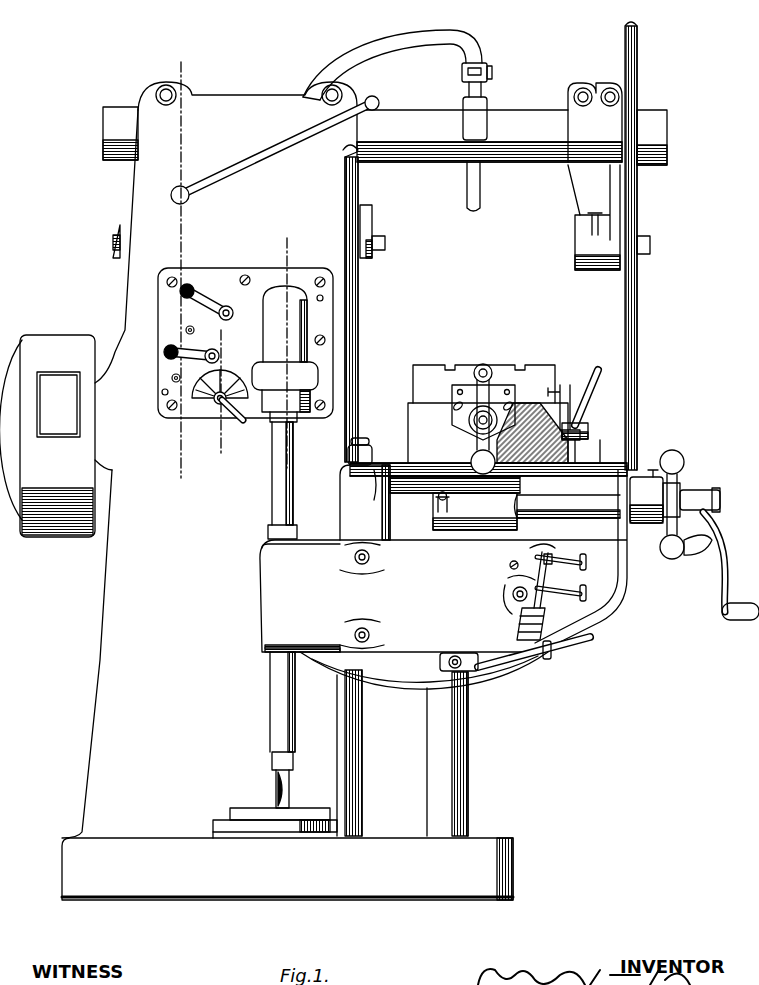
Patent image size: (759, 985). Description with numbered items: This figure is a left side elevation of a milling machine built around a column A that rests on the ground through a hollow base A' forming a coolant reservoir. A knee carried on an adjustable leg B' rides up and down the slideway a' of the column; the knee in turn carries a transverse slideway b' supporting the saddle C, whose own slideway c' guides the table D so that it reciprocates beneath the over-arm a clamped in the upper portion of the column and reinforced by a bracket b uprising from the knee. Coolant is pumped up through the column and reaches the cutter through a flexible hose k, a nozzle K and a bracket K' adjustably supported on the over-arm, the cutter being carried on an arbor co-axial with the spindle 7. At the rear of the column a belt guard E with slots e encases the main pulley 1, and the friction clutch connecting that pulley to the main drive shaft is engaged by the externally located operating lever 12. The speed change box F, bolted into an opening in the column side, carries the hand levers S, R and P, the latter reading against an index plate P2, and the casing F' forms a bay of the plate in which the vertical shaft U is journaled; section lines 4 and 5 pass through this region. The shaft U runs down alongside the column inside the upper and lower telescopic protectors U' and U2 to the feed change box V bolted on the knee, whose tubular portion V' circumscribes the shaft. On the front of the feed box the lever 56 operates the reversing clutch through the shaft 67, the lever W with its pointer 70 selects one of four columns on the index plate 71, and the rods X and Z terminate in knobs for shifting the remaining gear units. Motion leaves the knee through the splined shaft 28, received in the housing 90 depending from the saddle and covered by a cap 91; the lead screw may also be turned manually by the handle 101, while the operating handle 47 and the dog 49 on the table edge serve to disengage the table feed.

The column A is at (210, 460).
The base A' is at (303, 869).
The over-arm a is at (489, 176).
The slideway a' is at (298, 754).
The bracket b is at (646, 246).
The slideway b' is at (590, 440).
The adjustable leg B' is at (462, 754).
The flexible hose k is at (384, 38).
The nozzle K is at (486, 186).
The bracket K' is at (489, 101).
The spindle 7 is at (382, 250).
The operating lever 12 is at (277, 150).
The shaft 4 is at (179, 268).
The shaft 5 is at (225, 394).
The speed change box F is at (245, 328).
The casing F' is at (281, 354).
The hand lever S is at (180, 301).
The hand lever R is at (165, 357).
The hand lever P is at (240, 422).
The index plate P2 is at (228, 390).
The belt guard E is at (57, 338).
The pulley 1 is at (58, 404).
The slots e is at (61, 437).
The upper telescopic protector U' is at (267, 480).
The lower telescopic protector U2 is at (275, 702).
The vertical shaft U is at (266, 789).
The feed change box V is at (443, 576).
The tubular portion V' is at (283, 559).
The shaft 67 is at (365, 489).
The splined shaft 28 is at (405, 510).
The housing 90 is at (449, 514).
The cap 91 is at (598, 508).
The table D is at (488, 366).
The saddle C is at (488, 433).
The slideway c' is at (462, 412).
The handle 101 is at (480, 450).
The dog 49 is at (568, 398).
The operating handle 47 is at (596, 368).
The shifting rod X is at (550, 547).
The rod Z is at (582, 588).
The lever 56 is at (561, 571).
The index plate 71 is at (518, 628).
The pointer 70 is at (548, 655).
The lever W is at (515, 654).